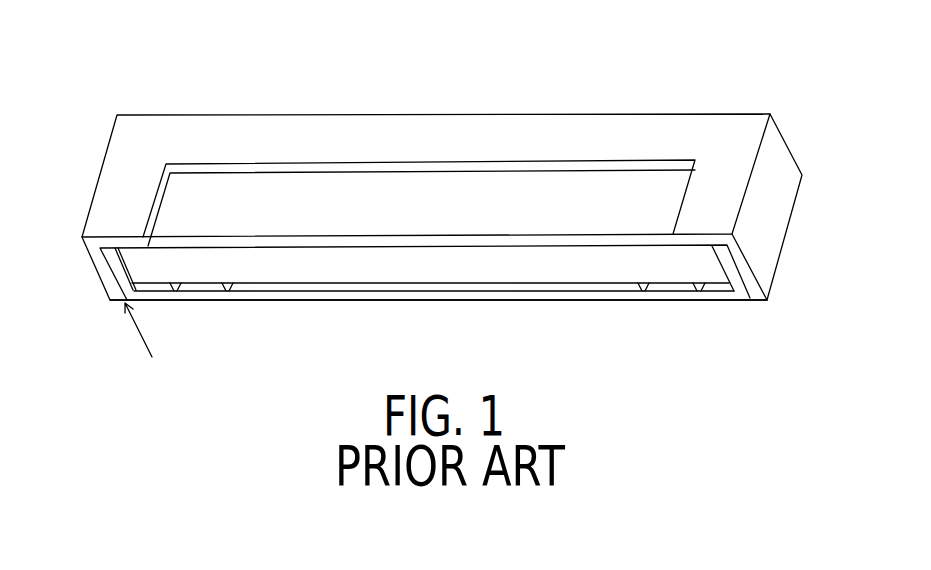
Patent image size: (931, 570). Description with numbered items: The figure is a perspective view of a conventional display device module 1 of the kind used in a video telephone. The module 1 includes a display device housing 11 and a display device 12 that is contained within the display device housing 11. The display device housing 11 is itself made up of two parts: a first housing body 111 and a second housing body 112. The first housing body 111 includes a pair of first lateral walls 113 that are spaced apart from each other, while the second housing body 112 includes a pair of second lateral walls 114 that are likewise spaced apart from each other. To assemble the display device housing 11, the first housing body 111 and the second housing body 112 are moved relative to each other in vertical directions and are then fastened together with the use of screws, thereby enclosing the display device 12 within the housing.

The display device module 1 is at (543, 97).
The display device housing 11 is at (778, 167).
The display device 12 is at (372, 196).
The first housing body 111 is at (582, 293).
The second housing body 112 is at (762, 304).
The first lateral walls 113 is at (123, 282).
The second lateral walls 114 is at (100, 268).